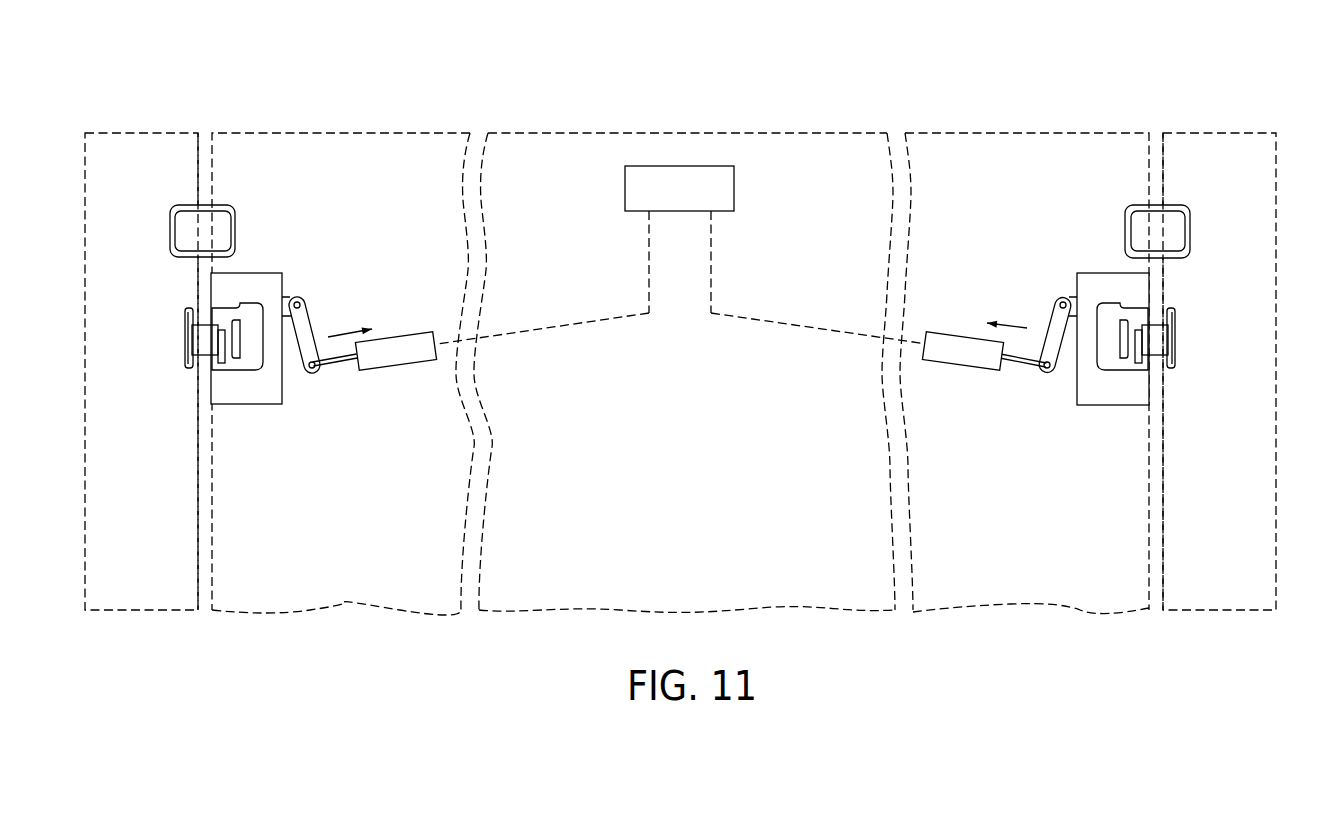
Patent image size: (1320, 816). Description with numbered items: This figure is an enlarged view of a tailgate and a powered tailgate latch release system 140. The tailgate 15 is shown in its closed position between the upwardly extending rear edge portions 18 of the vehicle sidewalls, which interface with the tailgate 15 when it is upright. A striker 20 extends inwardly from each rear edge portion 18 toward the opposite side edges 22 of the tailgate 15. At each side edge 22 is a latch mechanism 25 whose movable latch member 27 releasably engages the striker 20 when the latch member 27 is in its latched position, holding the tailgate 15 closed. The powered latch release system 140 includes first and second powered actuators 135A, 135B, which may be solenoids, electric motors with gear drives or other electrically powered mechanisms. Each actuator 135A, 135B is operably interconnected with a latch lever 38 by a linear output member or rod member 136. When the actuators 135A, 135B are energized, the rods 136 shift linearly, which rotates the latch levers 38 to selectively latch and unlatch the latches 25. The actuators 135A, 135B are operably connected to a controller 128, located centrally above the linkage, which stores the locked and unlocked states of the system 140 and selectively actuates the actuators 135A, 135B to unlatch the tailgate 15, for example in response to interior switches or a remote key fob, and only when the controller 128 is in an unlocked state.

The powered tailgate latch release system 140 is at (830, 53).
The rear edge portion 18 is at (160, 147).
The tailgate 15 is at (362, 132).
The side edge 22 is at (207, 442).
The controller 128 is at (723, 177).
The latch mechanism 25 is at (265, 388).
The movable latch member 27 is at (217, 353).
The striker 20 is at (205, 342).
The latch lever 38 is at (318, 336).
The rod member 136 is at (332, 367).
The first powered actuator 135A is at (403, 340).
The second powered actuator 135B is at (942, 340).